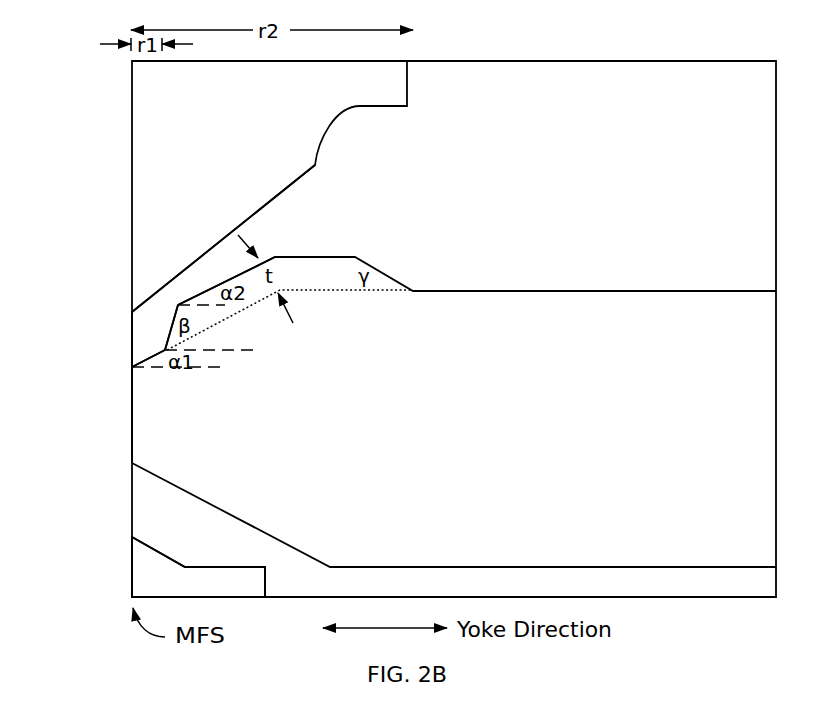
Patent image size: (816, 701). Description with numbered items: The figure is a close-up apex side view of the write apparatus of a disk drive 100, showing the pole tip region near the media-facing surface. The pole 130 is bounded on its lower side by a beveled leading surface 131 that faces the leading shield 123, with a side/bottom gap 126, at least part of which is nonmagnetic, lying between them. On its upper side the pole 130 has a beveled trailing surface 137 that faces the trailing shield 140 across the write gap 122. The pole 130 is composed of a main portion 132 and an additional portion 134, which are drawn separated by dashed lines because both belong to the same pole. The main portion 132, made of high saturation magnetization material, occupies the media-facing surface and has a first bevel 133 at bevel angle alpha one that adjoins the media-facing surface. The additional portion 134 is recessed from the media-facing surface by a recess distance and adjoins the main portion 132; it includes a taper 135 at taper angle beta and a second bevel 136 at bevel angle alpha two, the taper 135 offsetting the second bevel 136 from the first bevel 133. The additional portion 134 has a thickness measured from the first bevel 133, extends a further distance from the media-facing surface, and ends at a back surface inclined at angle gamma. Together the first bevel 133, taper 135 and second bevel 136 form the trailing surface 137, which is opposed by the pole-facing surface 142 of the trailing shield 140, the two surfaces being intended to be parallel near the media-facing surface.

The disk drive 100 is at (97, 24).
The write gap 122 is at (132, 352).
The leading shield 123 is at (198, 567).
The side/bottom gap 126 is at (132, 482).
The pole 130 is at (115, 397).
The leading surface 131 is at (152, 487).
The main portion 132 is at (454, 341).
The first bevel 133 is at (157, 364).
The additional portion 134 is at (315, 272).
The taper 135 is at (160, 320).
The second bevel 136 is at (212, 280).
The trailing surface 137 is at (278, 243).
The trailing shield 140 is at (269, 186).
The pole-facing surface 142 is at (240, 218).